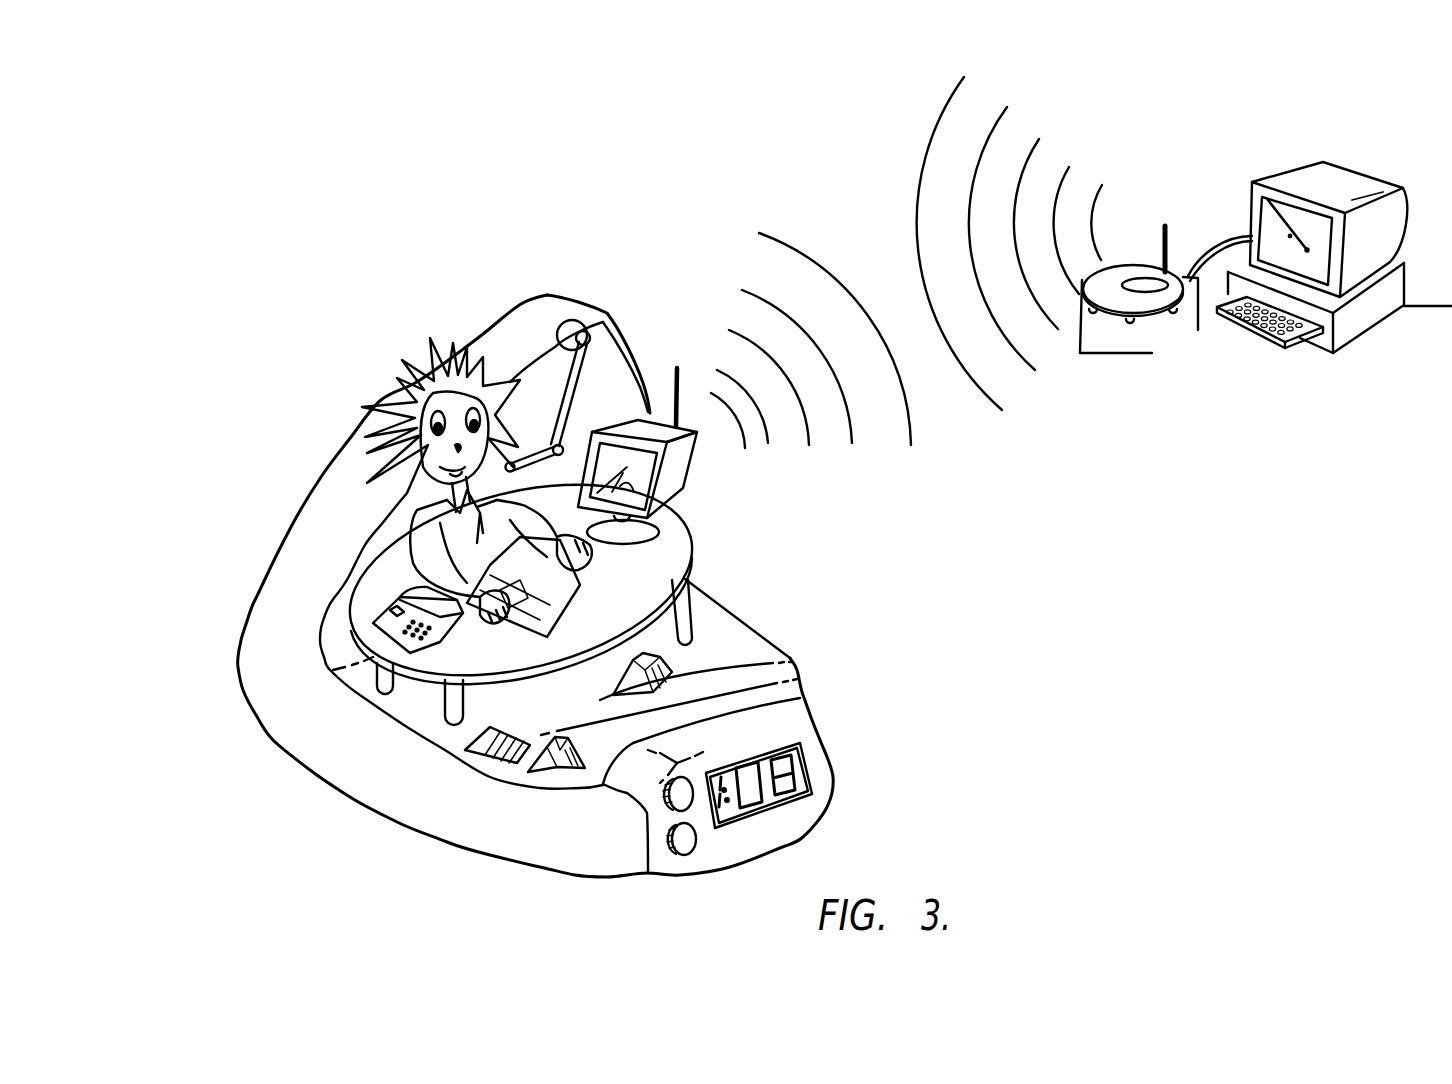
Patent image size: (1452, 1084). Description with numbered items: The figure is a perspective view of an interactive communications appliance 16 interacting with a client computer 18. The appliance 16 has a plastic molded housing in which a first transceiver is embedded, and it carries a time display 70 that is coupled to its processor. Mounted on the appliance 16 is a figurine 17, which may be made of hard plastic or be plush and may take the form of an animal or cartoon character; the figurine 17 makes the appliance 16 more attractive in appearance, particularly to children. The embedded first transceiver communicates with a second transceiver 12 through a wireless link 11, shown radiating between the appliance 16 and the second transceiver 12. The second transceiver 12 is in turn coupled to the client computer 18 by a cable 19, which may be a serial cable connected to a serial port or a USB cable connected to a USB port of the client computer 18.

The wireless link 11 is at (918, 188).
The second transceiver 12 is at (1158, 315).
The interactive communications appliance 16 is at (240, 747).
The figurine 17 is at (393, 380).
The client computer 18 is at (1363, 332).
The cable 19 is at (1217, 240).
The time display 70 is at (795, 748).